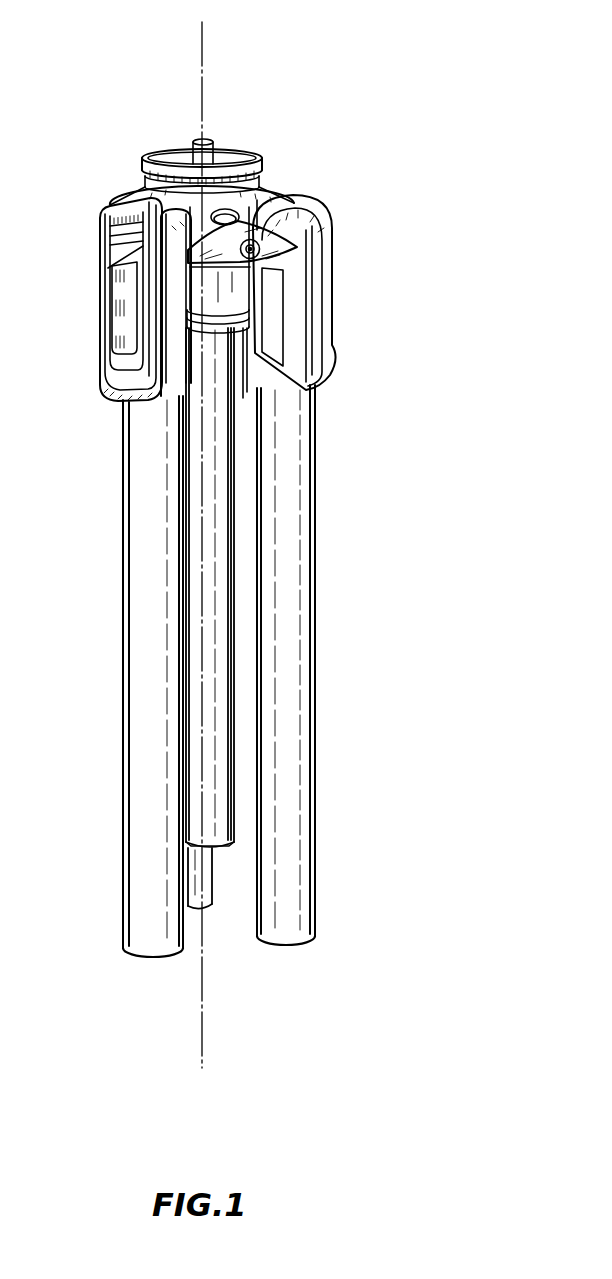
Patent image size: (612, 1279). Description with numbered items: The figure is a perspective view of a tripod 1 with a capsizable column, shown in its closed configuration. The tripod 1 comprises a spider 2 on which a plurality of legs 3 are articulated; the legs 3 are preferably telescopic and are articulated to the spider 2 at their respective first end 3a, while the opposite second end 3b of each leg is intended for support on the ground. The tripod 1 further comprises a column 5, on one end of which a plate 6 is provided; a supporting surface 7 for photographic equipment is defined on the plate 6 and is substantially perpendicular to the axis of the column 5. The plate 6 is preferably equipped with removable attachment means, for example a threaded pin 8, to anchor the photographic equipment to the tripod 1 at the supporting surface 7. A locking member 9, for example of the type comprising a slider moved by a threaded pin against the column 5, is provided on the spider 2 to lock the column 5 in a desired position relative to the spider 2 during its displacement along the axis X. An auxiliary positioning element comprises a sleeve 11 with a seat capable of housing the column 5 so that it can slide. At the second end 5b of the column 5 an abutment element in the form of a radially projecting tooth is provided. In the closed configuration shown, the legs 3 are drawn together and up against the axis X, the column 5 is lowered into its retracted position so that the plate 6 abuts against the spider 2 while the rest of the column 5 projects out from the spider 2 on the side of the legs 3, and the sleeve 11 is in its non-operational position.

The tripod 1 is at (437, 230).
The axis X is at (202, 52).
The spider 2 is at (110, 267).
The legs 3 is at (150, 742).
The first end 3a is at (298, 214).
The second end 3b is at (147, 958).
The column 5 is at (235, 600).
The second end 5b is at (229, 843).
The plate 6 is at (262, 157).
The supporting surface 7 is at (172, 150).
The threaded pin 8 is at (211, 140).
The locking member 9 is at (276, 236).
The sleeve 11 is at (223, 290).